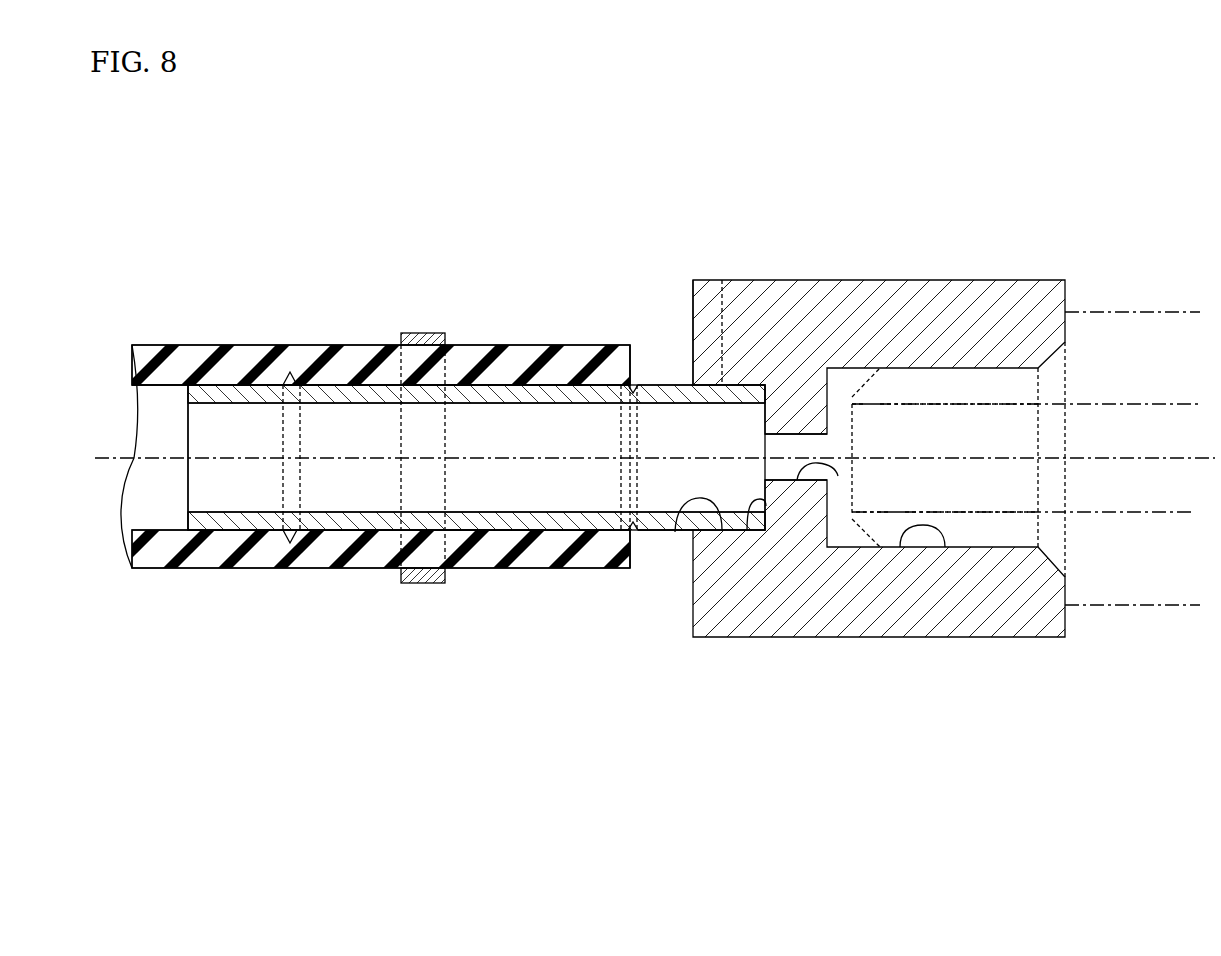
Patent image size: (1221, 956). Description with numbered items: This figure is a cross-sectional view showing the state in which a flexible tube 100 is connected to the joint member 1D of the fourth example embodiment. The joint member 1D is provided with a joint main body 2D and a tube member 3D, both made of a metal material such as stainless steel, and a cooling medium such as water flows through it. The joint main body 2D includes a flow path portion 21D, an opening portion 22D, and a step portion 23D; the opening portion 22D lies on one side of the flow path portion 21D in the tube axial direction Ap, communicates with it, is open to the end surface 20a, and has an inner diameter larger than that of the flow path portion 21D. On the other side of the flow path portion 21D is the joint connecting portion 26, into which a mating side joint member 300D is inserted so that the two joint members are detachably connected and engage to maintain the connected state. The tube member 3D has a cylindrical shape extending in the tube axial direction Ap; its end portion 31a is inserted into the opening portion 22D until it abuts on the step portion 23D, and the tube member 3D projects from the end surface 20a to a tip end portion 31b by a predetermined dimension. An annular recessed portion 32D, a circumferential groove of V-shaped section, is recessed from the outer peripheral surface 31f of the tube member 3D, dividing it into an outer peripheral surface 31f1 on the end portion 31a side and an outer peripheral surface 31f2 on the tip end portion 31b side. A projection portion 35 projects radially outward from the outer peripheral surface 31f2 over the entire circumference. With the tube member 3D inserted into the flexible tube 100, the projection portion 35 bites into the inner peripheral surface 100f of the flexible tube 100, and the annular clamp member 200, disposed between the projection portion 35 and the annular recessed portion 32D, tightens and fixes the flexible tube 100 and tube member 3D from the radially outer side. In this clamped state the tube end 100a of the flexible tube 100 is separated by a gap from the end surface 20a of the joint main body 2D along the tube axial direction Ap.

The joint member 1D is at (723, 243).
The joint main body 2D is at (995, 275).
The tube member 3D is at (513, 370).
The end surface 20a is at (693, 300).
The flow path portion 21D is at (835, 480).
The opening portion 22D is at (677, 535).
The step portion 23D is at (748, 533).
The joint connecting portion 26 is at (940, 547).
The end portion 31a is at (722, 290).
The tip end portion 31b is at (200, 568).
The outer peripheral surface 31f is at (467, 568).
The outer peripheral surface 31f1 is at (655, 533).
The outer peripheral surface 31f2 is at (373, 568).
The annular recessed portion 32D is at (628, 568).
The projection portion 35 is at (290, 372).
The flexible tube 100 is at (338, 345).
The tube end 100a is at (630, 345).
The inner peripheral surface 100f is at (257, 408).
The clamp member 200 is at (425, 333).
The mating side joint member 300D is at (1113, 300).
The tube axial direction Ap is at (1168, 458).